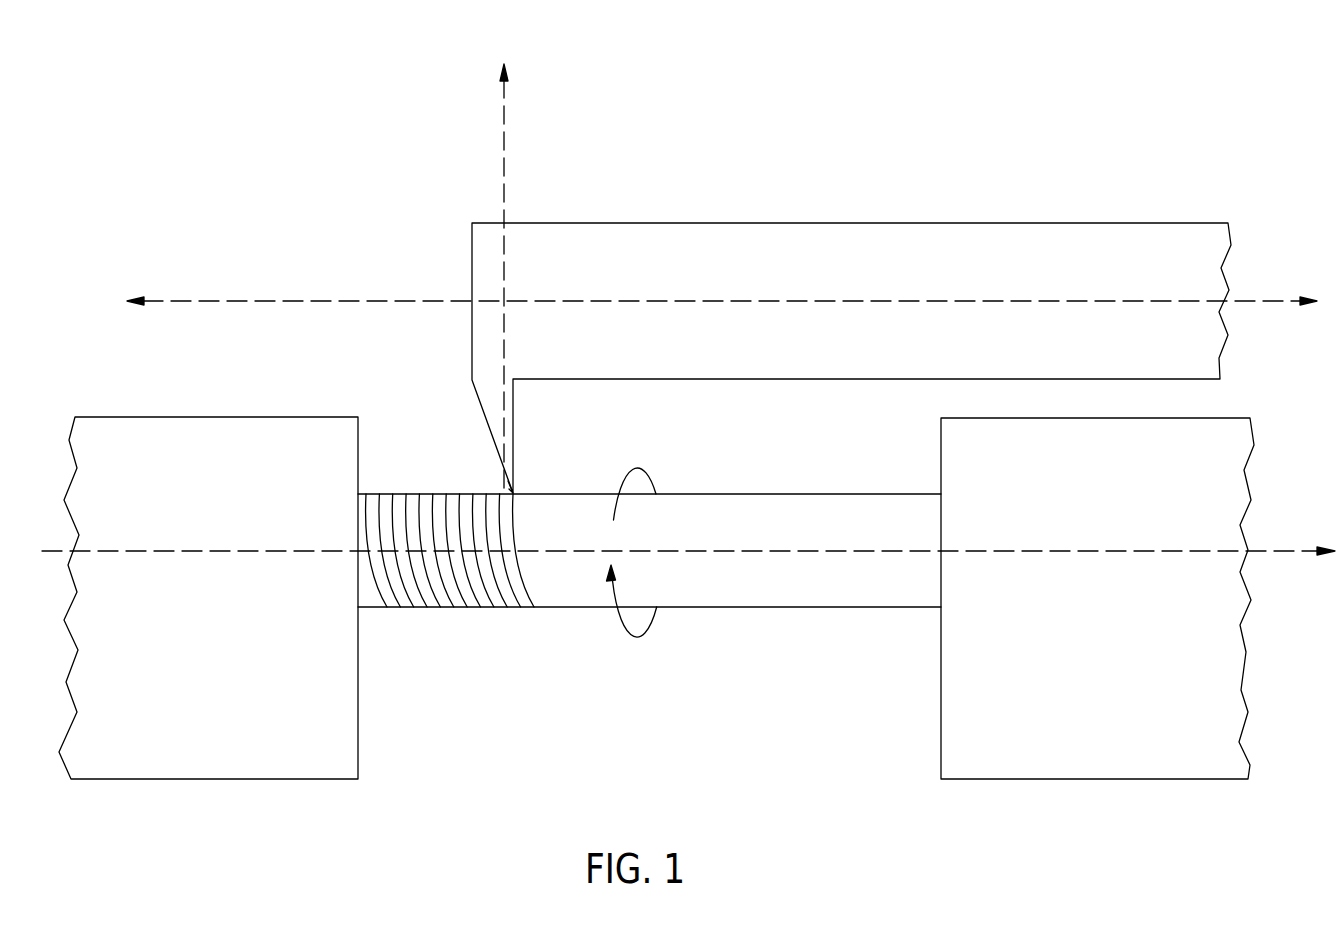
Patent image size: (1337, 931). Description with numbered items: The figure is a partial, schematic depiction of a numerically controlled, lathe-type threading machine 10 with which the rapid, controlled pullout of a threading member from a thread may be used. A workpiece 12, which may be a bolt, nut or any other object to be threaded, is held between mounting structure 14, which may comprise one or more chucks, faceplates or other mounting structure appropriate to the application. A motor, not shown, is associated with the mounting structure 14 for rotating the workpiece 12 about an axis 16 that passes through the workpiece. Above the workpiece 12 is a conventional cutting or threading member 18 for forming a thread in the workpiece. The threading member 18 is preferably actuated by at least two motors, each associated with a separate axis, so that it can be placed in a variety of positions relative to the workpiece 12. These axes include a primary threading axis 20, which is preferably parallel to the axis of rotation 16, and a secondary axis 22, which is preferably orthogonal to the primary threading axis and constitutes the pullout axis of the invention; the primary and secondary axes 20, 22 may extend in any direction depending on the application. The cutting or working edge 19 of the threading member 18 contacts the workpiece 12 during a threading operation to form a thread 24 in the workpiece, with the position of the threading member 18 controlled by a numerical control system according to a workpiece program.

The threading machine 10 is at (1108, 121).
The workpiece 12 is at (782, 597).
The mounting structure 14 is at (206, 772).
The axis 16 is at (1055, 553).
The threading member 18 is at (998, 228).
The working edge 19 is at (511, 476).
The primary threading axis 20 is at (1272, 300).
The secondary axis 22 is at (512, 146).
The thread 24 is at (462, 607).